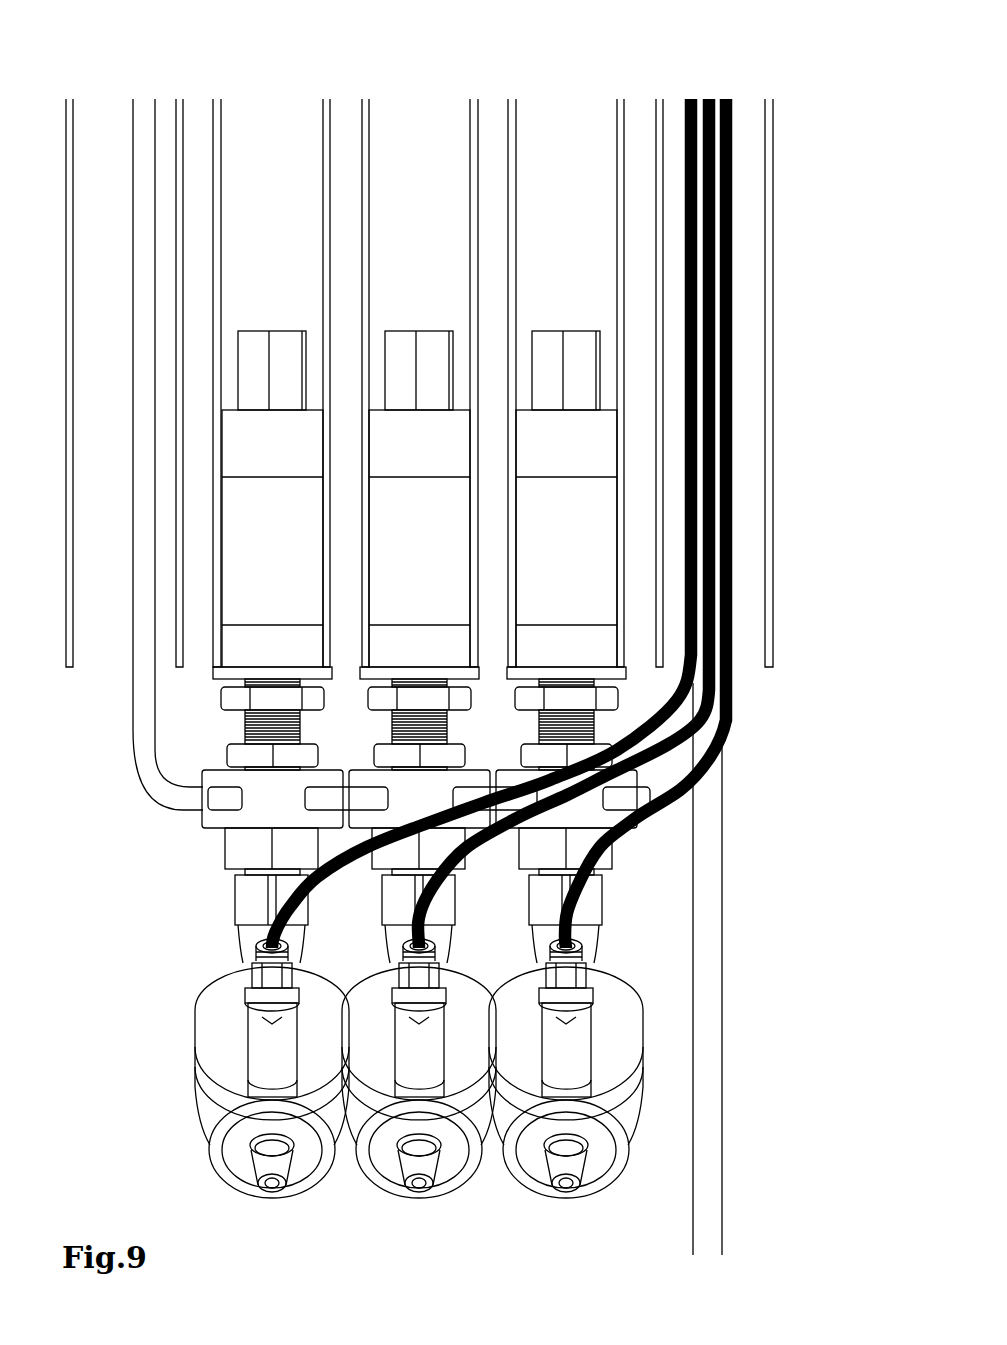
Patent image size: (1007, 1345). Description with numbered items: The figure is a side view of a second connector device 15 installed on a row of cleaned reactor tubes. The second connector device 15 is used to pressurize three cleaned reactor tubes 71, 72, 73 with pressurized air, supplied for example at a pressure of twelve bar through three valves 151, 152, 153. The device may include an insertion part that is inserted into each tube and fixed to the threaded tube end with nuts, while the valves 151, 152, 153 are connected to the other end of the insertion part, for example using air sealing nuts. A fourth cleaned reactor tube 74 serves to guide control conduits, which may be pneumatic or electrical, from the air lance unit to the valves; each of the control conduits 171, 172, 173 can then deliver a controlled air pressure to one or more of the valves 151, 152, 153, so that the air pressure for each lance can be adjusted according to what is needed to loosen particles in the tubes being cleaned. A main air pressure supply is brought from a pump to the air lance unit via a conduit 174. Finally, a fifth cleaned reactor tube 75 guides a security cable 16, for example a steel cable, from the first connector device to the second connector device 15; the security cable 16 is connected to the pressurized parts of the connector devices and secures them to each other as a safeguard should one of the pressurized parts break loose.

The second connector device 15 is at (768, 752).
The security cable 16 is at (144, 120).
The cleaned reactor tube 71 is at (242, 115).
The cleaned reactor tube 72 is at (388, 115).
The cleaned reactor tube 73 is at (537, 115).
The fourth cleaned reactor tube 74 is at (673, 117).
The fifth cleaned reactor tube 75 is at (101, 115).
The valve 151 is at (308, 1162).
The valve 152 is at (455, 1162).
The valve 153 is at (602, 1167).
The control conduit 171 is at (690, 102).
The control conduit 172 is at (708, 102).
The control conduit 173 is at (727, 102).
The conduit 174 is at (707, 1058).